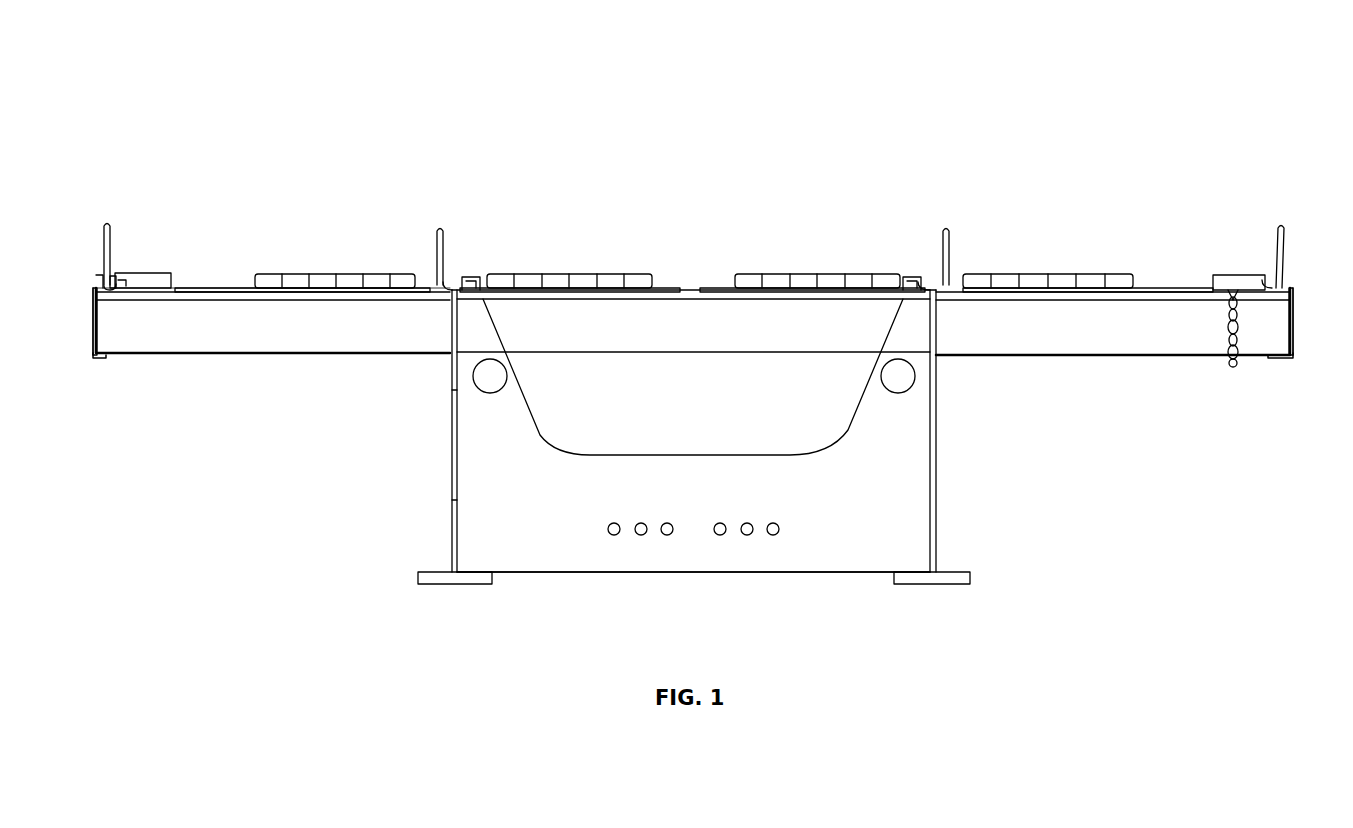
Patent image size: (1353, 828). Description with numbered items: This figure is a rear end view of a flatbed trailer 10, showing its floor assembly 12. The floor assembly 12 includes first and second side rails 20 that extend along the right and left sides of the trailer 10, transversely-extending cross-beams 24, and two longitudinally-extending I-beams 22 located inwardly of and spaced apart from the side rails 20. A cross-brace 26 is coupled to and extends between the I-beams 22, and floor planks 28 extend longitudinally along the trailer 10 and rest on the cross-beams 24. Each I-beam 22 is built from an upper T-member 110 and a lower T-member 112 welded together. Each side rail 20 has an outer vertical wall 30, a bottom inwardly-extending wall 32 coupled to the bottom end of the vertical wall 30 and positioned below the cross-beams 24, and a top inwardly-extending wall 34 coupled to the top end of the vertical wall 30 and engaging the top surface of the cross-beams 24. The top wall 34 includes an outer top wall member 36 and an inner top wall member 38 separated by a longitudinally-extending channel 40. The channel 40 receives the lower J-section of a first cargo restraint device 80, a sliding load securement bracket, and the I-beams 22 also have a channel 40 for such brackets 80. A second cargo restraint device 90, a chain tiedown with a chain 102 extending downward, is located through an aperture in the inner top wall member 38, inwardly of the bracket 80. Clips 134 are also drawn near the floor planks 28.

The flatbed trailer 10 is at (1172, 92).
The floor assembly 12 is at (1080, 243).
The side rail 20 is at (91, 333).
The I-beam 22 is at (445, 448).
The cross-beam 24 is at (285, 338).
The cross-brace 26 is at (805, 555).
The floor plank 28 is at (272, 273).
The outer vertical wall 30 is at (96, 330).
The bottom inwardly-extending wall 32 is at (102, 357).
The top inwardly-extending wall 34 is at (157, 272).
The outer top wall member 36 is at (98, 275).
The inner top wall member 38 is at (160, 275).
The channel 40 is at (113, 285).
The first cargo restraint device 80 is at (108, 224).
The second cargo restraint device 90 is at (1212, 318).
The chain 102 is at (1228, 325).
The upper T-member 110 is at (452, 398).
The lower T-member 112 is at (452, 508).
The clip 134 is at (480, 270).